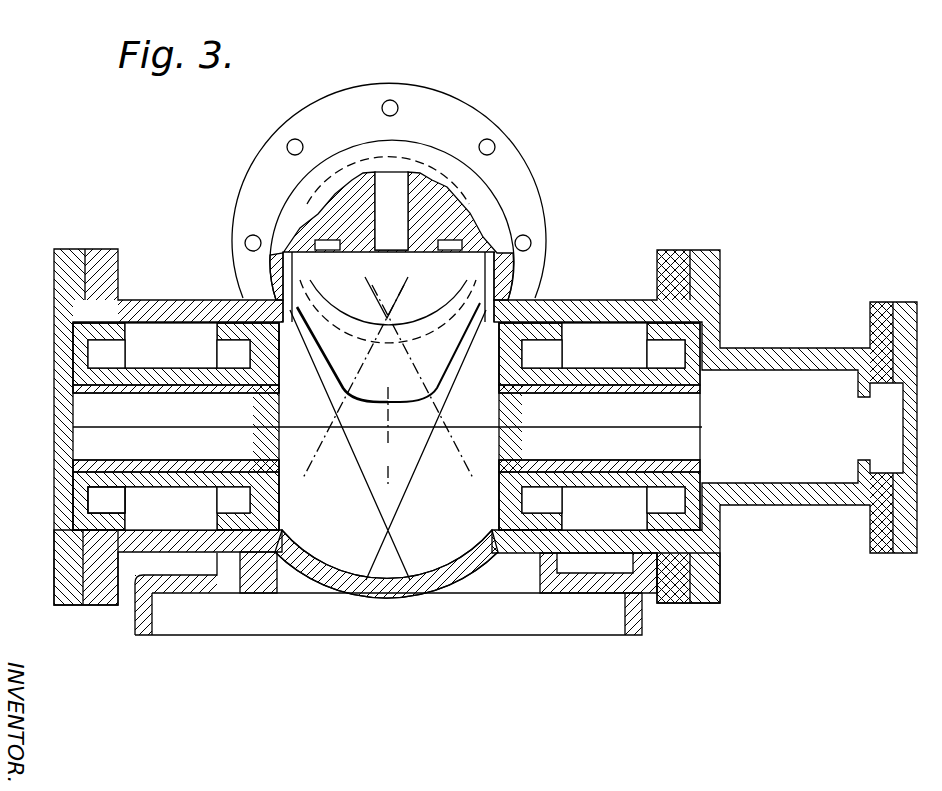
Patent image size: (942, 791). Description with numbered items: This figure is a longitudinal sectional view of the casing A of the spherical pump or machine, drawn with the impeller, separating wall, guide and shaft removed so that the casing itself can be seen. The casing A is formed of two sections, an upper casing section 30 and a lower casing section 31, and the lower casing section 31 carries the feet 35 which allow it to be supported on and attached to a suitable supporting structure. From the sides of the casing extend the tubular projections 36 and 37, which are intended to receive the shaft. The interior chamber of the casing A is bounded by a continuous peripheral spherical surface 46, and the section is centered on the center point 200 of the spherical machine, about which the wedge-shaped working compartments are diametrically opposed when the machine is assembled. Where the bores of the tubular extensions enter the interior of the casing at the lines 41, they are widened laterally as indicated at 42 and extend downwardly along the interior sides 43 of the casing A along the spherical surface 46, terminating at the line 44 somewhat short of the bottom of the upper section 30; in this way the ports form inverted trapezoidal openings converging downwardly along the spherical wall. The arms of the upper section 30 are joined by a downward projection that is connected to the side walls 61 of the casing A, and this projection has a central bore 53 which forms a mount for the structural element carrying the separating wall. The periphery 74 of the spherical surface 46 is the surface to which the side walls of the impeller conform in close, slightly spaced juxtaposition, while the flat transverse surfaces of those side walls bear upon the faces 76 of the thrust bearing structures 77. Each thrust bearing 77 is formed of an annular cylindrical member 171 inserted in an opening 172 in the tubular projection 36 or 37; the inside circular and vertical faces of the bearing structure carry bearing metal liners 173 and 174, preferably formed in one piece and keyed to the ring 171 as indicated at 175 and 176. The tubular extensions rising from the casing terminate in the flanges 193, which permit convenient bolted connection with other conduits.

The upper casing section 30 is at (265, 298).
The lower casing section 31 is at (293, 565).
The feet 35 is at (187, 583).
The tubular projection 36 is at (155, 320).
The tubular projection 37 is at (608, 308).
The lines 41 is at (370, 388).
The lateral widening 42 is at (318, 347).
The interior sides 43 is at (327, 443).
The line 44 is at (405, 400).
The peripheral spherical surface 46 is at (350, 580).
The central bore 53 is at (425, 208).
The side walls 61 is at (248, 236).
The periphery 74 is at (268, 292).
The faces 76 is at (279, 513).
The thrust bearing structures 77 is at (91, 504).
The annular cylindrical members 171 is at (183, 377).
The openings 172 is at (85, 545).
The bearing metal liner 173 is at (278, 492).
The bearing metal liner 174 is at (172, 384).
The key 175 is at (240, 499).
The key 176 is at (93, 380).
The flanges 193 is at (401, 190).
The center point 200 is at (394, 436).
The casing A is at (447, 583).